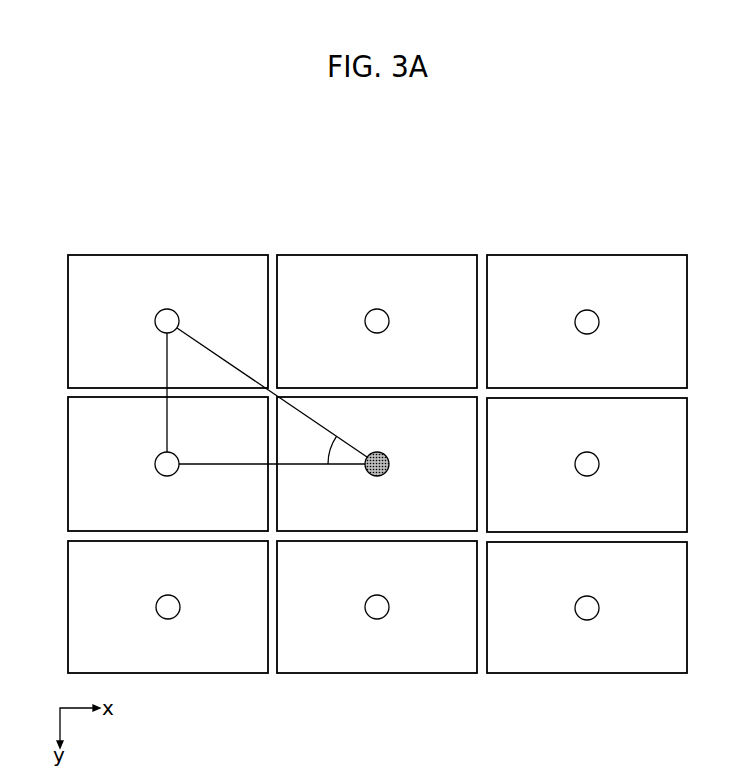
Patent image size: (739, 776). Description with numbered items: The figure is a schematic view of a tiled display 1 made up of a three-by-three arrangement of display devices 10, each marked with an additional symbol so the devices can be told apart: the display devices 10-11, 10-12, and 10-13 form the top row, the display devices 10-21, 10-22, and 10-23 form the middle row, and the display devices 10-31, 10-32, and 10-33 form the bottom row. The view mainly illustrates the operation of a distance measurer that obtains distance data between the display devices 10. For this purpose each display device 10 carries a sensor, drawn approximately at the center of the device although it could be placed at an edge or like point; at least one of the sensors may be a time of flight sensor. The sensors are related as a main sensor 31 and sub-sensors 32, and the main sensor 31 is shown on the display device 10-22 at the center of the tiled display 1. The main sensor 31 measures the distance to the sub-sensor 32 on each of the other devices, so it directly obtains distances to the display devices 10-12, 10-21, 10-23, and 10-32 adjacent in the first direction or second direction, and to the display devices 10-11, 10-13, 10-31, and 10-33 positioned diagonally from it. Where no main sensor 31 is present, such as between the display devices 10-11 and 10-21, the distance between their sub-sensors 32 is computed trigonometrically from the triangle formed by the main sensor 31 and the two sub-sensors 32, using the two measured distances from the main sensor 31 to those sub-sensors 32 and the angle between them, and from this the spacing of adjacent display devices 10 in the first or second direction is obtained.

The tiled display 1 is at (415, 219).
The display device 10 is at (587, 295).
The display device 10-11 is at (168, 294).
The display device 10-12 is at (377, 321).
The display device 10-13 is at (587, 321).
The display device 10-21 is at (168, 464).
The display device 10-22 is at (377, 464).
The display device 10-23 is at (587, 465).
The display device 10-31 is at (168, 607).
The display device 10-32 is at (377, 607).
The display device 10-33 is at (587, 607).
The main sensor 31 is at (387, 471).
The sub-sensor 32 is at (167, 308).